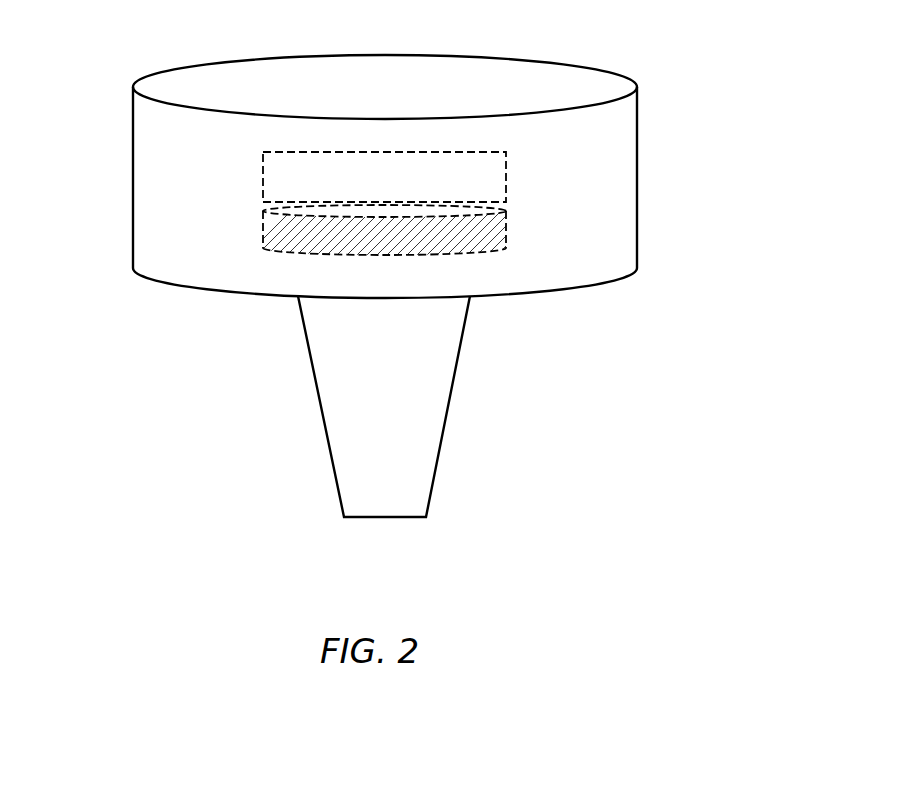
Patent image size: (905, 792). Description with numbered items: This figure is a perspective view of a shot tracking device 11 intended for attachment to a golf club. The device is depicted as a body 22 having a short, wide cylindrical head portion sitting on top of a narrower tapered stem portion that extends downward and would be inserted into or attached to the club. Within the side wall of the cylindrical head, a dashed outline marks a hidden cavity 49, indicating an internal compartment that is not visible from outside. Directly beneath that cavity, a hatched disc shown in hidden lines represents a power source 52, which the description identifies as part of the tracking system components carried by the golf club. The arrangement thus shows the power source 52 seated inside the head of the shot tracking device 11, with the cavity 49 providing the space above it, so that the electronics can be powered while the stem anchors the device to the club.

The assembly 11 is at (393, 263).
The body 22 is at (449, 263).
The cavity 49 is at (506, 163).
The power source 52 is at (507, 233).